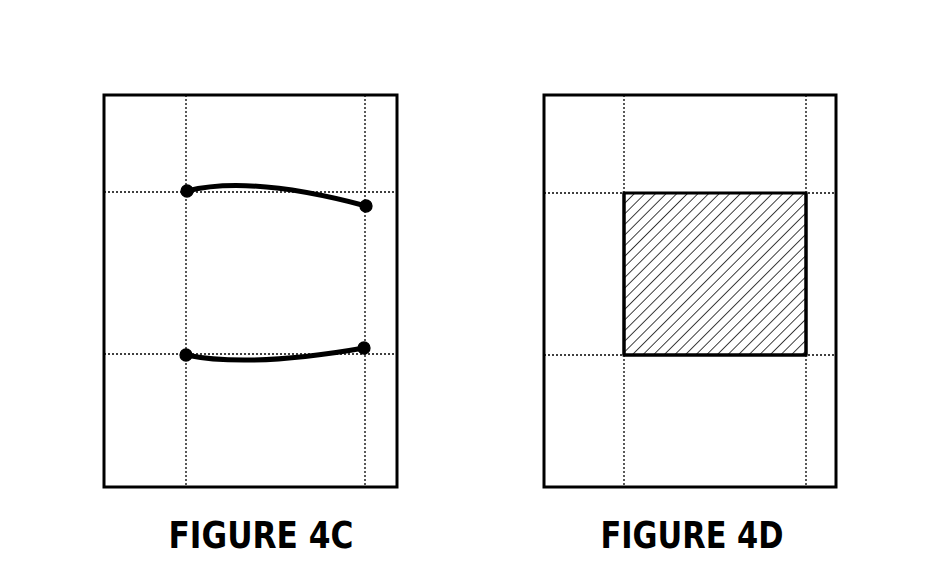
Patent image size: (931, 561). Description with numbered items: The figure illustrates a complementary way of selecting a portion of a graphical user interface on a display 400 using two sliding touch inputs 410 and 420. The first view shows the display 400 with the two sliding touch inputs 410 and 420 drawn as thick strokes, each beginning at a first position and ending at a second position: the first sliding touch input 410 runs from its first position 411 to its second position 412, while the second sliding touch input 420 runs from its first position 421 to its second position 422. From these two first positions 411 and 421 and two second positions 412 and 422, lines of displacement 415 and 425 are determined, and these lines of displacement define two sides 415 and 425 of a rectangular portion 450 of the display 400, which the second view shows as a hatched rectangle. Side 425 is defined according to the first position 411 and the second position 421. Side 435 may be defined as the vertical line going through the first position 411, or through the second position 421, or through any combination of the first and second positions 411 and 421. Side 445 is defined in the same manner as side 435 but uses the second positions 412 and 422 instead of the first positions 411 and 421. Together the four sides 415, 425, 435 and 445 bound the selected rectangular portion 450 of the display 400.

In FIG. 4C, the display 400 is at (397, 117).
In FIG. 4D, the display 400 is at (833, 117).
In FIG. 4C, the sliding touch input 410 is at (248, 183).
In FIG. 4C, the first position 411 is at (193, 187).
In FIG. 4C, the second position 412 is at (367, 188).
In FIG. 4C, the sliding touch input 420 is at (233, 354).
In FIG. 4C, the first position 421 is at (186, 356).
In FIG. 4C, the second position 422 is at (366, 358).
In FIG. 4D, the line of displacement 415 is at (703, 192).
In FIG. 4D, the line of displacement 425 is at (685, 355).
In FIG. 4D, the side 435 is at (625, 250).
In FIG. 4D, the side 445 is at (807, 252).
In FIG. 4D, the rectangular portion 450 is at (753, 315).